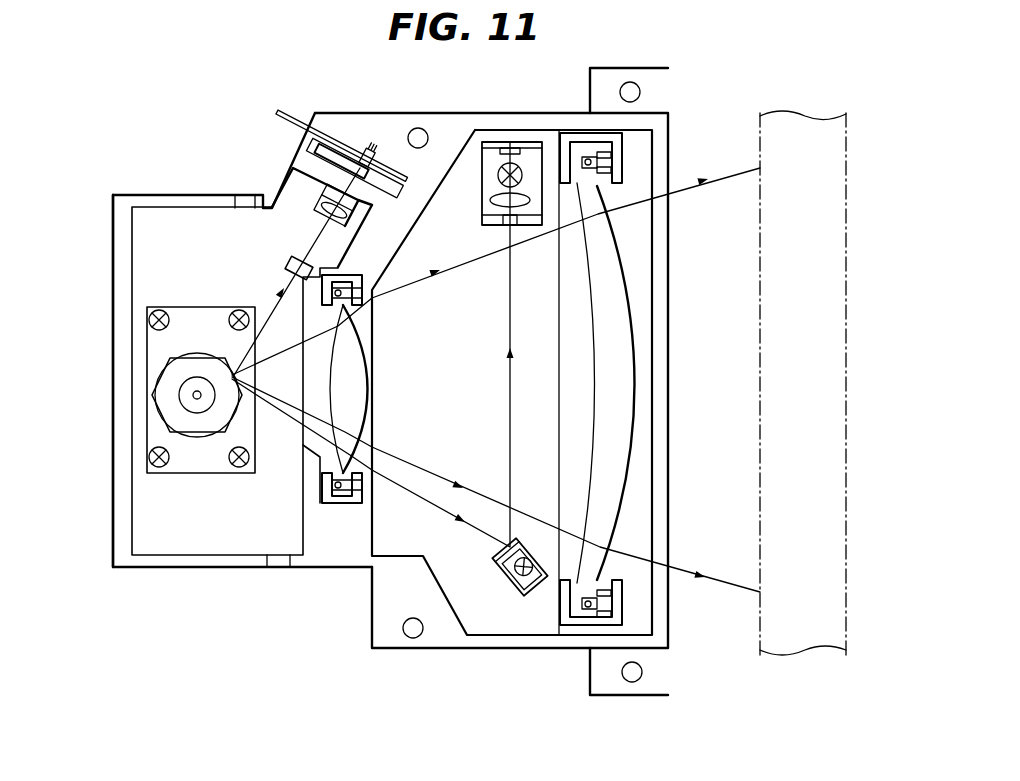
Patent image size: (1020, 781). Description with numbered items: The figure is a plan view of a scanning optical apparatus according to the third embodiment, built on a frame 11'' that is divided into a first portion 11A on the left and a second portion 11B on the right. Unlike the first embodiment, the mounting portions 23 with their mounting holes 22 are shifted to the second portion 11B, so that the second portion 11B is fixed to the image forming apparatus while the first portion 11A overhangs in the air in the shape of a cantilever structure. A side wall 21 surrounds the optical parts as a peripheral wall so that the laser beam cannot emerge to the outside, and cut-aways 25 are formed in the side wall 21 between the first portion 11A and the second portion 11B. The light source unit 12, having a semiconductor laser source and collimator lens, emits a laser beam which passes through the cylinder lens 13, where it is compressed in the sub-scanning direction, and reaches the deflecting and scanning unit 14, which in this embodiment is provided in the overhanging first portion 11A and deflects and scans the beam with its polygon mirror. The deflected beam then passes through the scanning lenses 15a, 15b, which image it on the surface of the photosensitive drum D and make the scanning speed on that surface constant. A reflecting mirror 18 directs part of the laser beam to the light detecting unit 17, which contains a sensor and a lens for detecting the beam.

The frame 11'' is at (447, 382).
The first portion 11A is at (202, 568).
The second portion 11B is at (527, 648).
The light source unit 12 is at (353, 138).
The cylinder lens 13 is at (287, 260).
The deflecting and scanning unit 14 is at (202, 479).
The scanning lens 15a is at (353, 425).
The scanning lens 15b is at (602, 378).
The light detecting unit 17 is at (525, 142).
The reflecting mirror 18 is at (497, 560).
The side wall 21 is at (112, 503).
The mounting hole 22 is at (417, 128).
The mounting portion 23 is at (388, 127).
The cut-away 25 is at (246, 195).
The photosensitive drum D is at (760, 628).